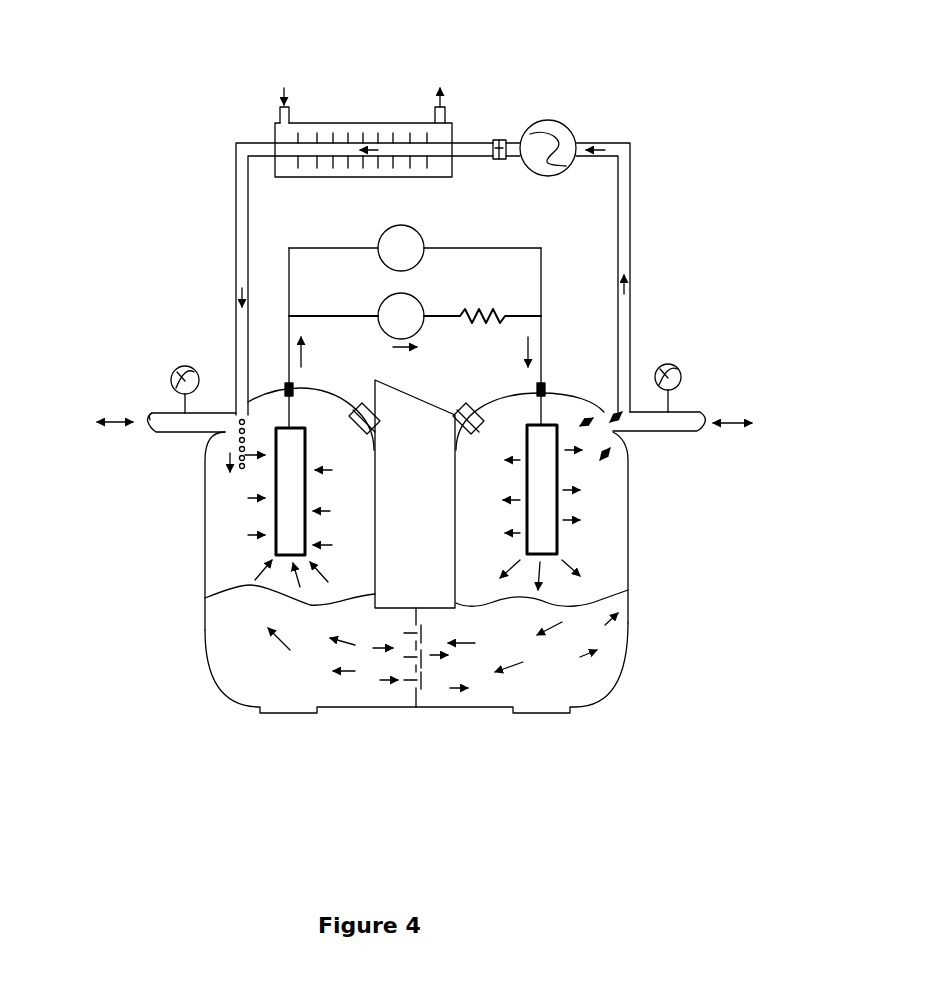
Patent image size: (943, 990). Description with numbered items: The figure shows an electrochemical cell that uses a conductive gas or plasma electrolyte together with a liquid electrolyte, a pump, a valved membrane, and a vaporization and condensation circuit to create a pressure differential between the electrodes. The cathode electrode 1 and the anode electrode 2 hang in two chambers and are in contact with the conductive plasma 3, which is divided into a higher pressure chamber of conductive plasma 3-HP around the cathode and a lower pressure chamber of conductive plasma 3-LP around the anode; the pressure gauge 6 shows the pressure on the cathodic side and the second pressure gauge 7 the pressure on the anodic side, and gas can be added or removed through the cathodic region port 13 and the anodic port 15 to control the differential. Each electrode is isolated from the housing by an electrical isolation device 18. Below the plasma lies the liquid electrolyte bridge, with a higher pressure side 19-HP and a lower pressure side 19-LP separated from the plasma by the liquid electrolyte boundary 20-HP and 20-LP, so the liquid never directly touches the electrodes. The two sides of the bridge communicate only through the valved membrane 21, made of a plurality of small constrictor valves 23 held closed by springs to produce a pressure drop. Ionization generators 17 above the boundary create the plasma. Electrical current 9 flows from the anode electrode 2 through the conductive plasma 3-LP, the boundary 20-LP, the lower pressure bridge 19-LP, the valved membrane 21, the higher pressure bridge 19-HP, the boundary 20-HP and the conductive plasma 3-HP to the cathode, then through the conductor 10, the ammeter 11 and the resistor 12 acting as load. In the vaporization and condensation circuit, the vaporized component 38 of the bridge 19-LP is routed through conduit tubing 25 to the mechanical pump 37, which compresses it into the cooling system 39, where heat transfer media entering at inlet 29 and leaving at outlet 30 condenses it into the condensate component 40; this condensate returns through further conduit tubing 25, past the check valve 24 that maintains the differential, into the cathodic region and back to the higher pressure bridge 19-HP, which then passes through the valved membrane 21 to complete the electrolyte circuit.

The cathode electrode 1 is at (285, 486).
The anode electrode 2 is at (538, 450).
The conductive plasma 3 is at (478, 505).
The conductive plasma (higher pressure) 3-HP is at (230, 540).
The conductive plasma (lower pressure) 3-LP is at (593, 540).
The pressure gauge 6 is at (160, 360).
The second pressure gauge 7 is at (683, 377).
The electrical current 9 is at (428, 358).
The conductor 10 is at (357, 308).
The ammeter 11 is at (390, 307).
The resistor 12 is at (483, 308).
The cathodic region port 13 is at (148, 413).
The anodic port 15 is at (705, 412).
The ionization generators 17 is at (416, 483).
The electrical isolation device 18 is at (546, 390).
The higher pressure side of liquid electrolyte bridge 19-HP is at (248, 630).
The lower pressure side of liquid electrolyte bridge 19-LP is at (577, 685).
The liquid electrolyte boundary (higher pressure) 20-HP is at (248, 590).
The liquid electrolyte boundary (lower pressure) 20-LP is at (613, 593).
The valved membrane 21 is at (430, 683).
The constrictor valves 23 is at (413, 682).
The check valve 24 is at (502, 128).
The conduit tubing 25 is at (230, 228).
The heat transfer media inlet 29 is at (268, 92).
The heat transfer media outlet 30 is at (437, 92).
The mechanical pump 37 is at (572, 124).
The vaporized component 38 is at (613, 450).
The cooling system 39 is at (340, 110).
The condensate component 40 is at (230, 452).